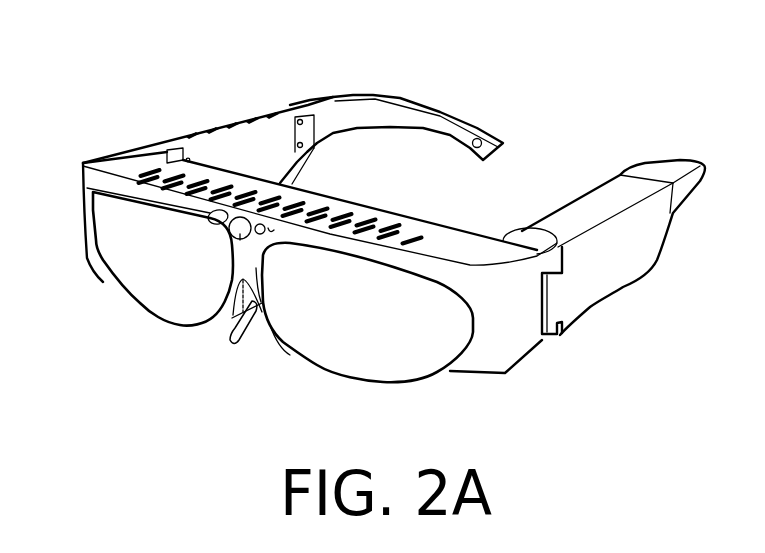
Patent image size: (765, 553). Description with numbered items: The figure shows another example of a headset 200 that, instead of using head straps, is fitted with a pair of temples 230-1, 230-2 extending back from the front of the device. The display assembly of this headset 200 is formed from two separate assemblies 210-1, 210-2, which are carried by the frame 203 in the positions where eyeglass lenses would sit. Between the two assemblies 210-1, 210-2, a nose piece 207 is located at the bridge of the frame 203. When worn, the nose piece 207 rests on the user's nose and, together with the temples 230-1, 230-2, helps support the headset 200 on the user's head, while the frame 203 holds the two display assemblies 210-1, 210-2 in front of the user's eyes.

The headset 200 is at (600, 26).
The frame 203 is at (112, 163).
The nose piece 207 is at (231, 343).
The display assembly 210-1 is at (153, 288).
The display assembly 210-2 is at (395, 367).
The temple 230-1 is at (337, 125).
The temple 230-2 is at (630, 263).